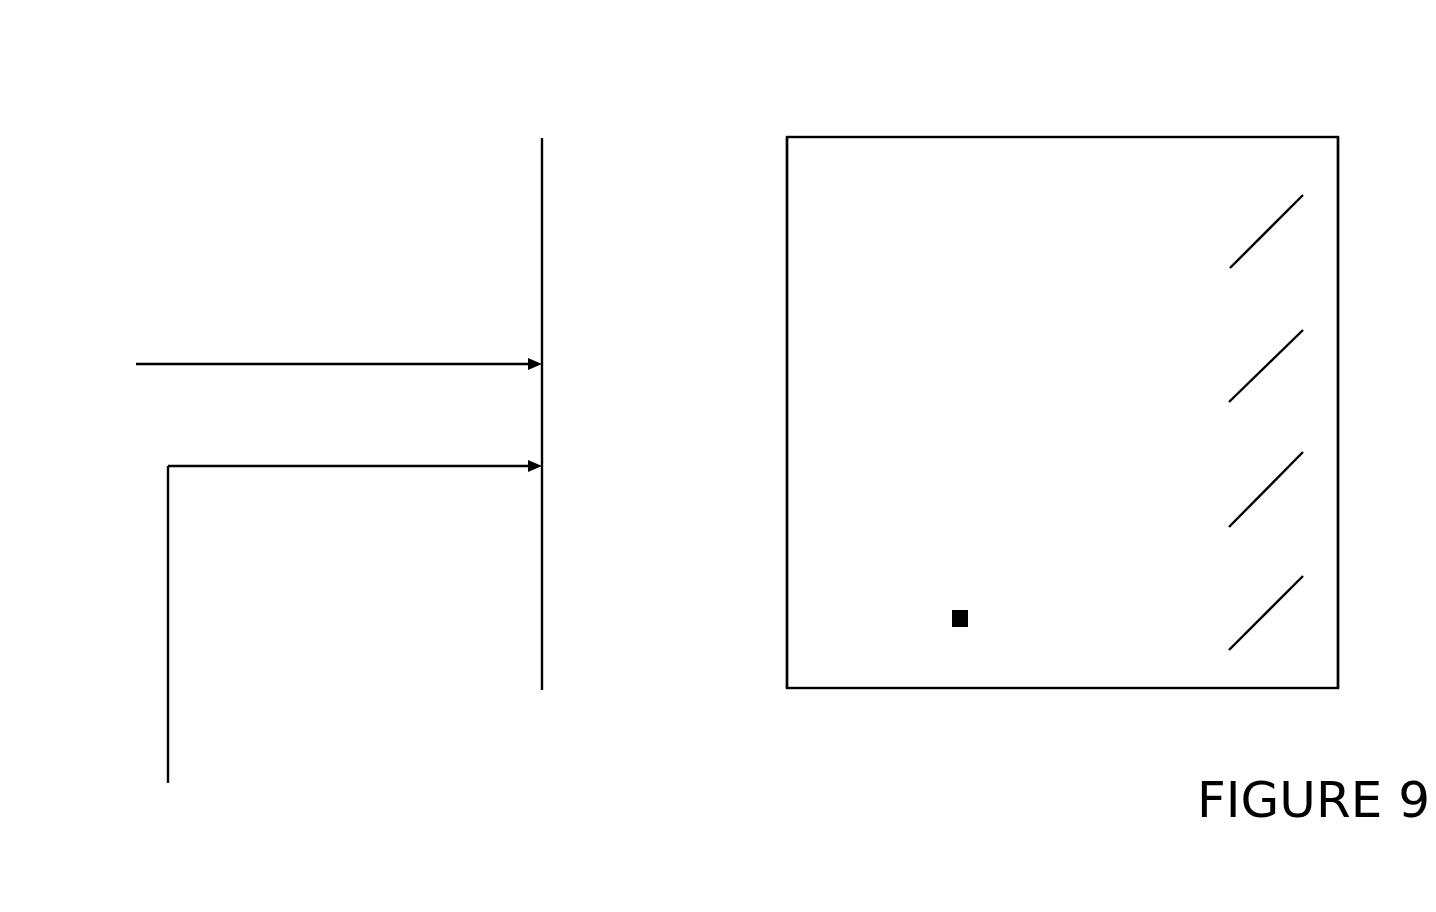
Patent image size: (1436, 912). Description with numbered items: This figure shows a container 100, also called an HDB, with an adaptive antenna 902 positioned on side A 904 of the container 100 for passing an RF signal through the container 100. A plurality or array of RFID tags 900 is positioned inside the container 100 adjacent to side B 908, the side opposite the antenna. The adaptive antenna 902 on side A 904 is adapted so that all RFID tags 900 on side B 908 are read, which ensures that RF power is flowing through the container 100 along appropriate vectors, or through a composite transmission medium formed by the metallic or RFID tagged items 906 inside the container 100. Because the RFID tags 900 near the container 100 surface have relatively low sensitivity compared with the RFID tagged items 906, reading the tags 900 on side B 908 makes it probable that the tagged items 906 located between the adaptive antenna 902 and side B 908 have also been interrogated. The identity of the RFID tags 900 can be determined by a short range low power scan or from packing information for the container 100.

The container 100 is at (1124, 151).
The RFID tags 900 is at (1296, 342).
The adaptive antenna 902 is at (542, 220).
The side A 904 is at (787, 238).
The RFID tagged items 906 is at (953, 627).
The side B 908 is at (1338, 231).